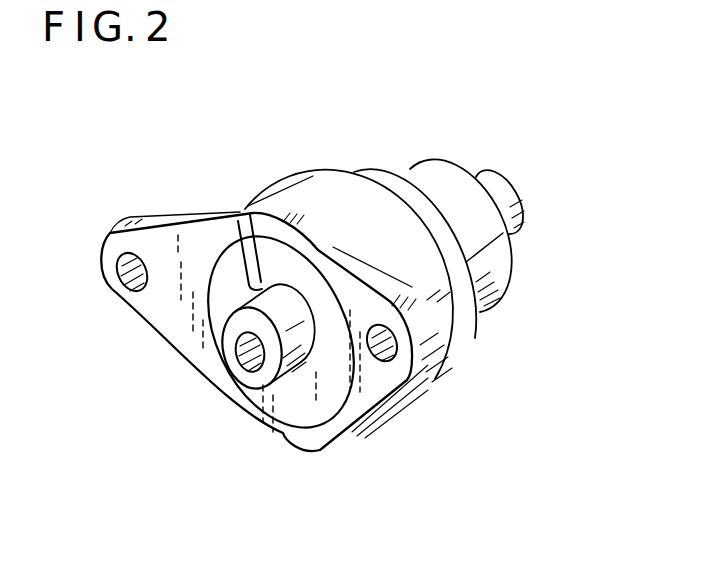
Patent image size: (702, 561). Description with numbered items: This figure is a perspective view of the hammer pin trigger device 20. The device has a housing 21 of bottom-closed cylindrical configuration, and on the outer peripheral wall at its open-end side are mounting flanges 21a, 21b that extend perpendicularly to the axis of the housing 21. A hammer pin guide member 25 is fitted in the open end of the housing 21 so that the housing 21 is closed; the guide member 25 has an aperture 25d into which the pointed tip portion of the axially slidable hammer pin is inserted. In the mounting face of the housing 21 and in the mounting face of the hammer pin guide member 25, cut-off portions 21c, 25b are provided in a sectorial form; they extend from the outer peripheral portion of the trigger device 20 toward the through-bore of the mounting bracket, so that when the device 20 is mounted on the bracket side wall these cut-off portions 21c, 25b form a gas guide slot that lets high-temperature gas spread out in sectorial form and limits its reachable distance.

The hammer pin trigger device 20 is at (534, 166).
The housing 21 is at (387, 230).
The mounting flange 21a is at (428, 318).
The mounting flange 21b is at (162, 222).
The cut-off portion 21c is at (252, 225).
The hammer pin guide member 25 is at (297, 407).
The cut-off portion 25b is at (312, 270).
The aperture 25d is at (250, 366).